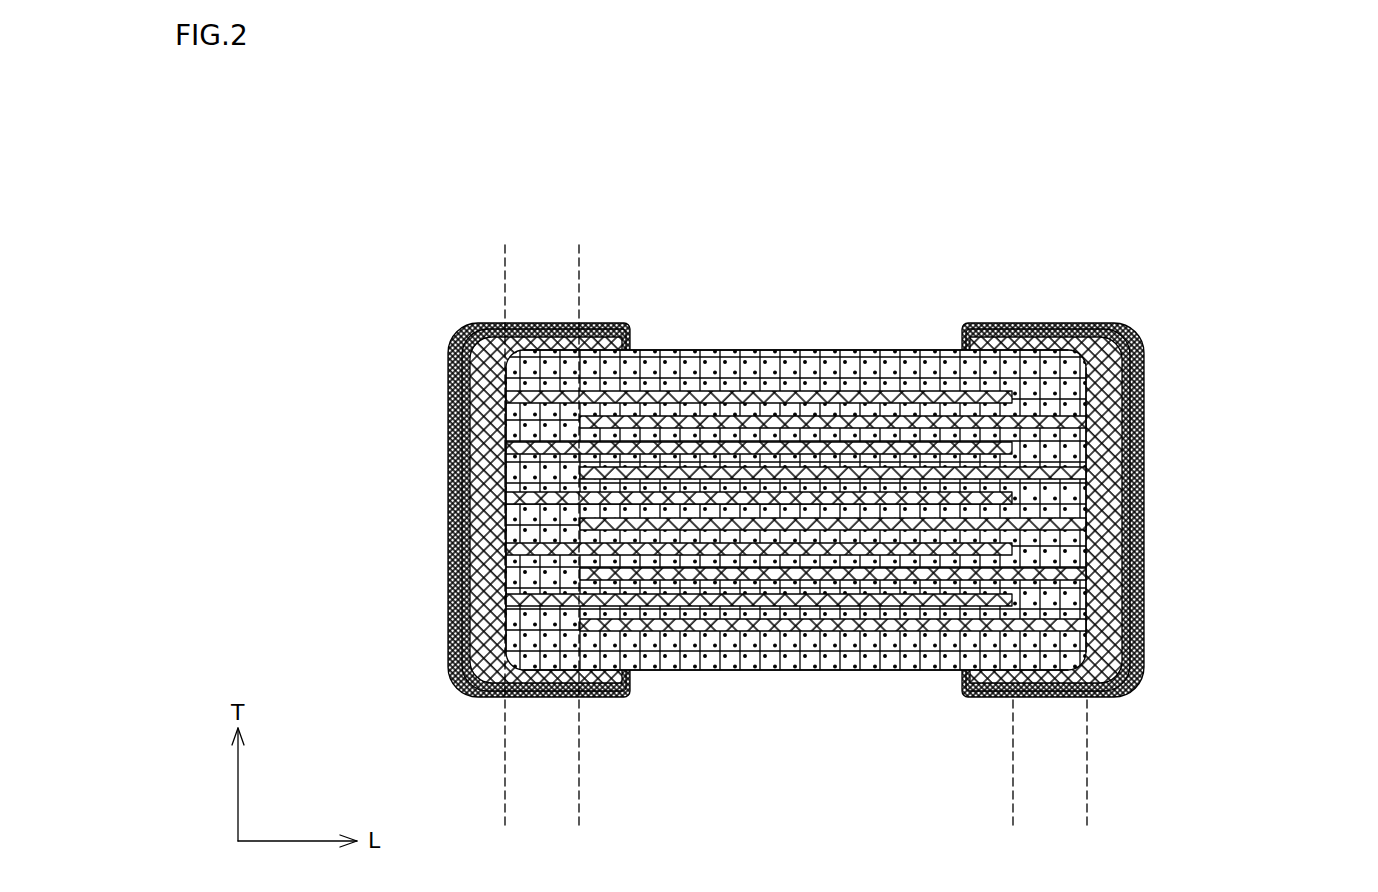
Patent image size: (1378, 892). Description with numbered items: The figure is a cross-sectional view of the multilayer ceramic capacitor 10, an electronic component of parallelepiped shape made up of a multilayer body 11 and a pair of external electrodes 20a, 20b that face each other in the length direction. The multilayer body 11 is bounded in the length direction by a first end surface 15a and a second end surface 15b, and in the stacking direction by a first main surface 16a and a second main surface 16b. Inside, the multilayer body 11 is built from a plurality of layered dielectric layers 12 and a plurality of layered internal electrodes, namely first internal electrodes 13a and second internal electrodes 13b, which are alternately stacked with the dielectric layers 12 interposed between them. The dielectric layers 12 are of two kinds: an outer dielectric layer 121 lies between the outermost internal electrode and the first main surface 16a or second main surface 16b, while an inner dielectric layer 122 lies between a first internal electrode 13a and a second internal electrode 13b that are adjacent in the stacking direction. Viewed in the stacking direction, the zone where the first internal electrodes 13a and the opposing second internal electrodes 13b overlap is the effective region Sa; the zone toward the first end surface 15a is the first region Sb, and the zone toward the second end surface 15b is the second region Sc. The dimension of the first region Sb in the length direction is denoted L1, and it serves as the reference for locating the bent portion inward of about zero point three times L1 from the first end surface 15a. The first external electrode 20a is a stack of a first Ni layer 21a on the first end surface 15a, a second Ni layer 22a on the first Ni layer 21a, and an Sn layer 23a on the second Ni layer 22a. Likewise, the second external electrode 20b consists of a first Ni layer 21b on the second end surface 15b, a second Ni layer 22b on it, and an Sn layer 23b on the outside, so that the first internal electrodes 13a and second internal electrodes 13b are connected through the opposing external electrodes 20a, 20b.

The multilayer ceramic capacitor 10 is at (970, 207).
The multilayer body 11 is at (680, 350).
The dielectric layer 12 is at (796, 510).
The outer dielectric layer 121 is at (937, 363).
The inner dielectric layer 122 is at (818, 437).
The first internal electrode 13a is at (915, 442).
The second internal electrode 13b is at (830, 577).
The first end surface 15a is at (503, 464).
The second end surface 15b is at (1089, 458).
The first main surface 16a is at (740, 350).
The second main surface 16b is at (670, 673).
The first external electrode 20a is at (669, 510).
The second external electrode 20b is at (934, 510).
The first Ni layer 21a is at (472, 512).
The second Ni layer 22a is at (466, 543).
The Sn layer 23a is at (455, 566).
The first Ni layer 21b is at (1122, 497).
The second Ni layer 22b is at (1130, 525).
The Sn layer 23b is at (1140, 552).
The dimension in the length direction of the first region L1 is at (579, 277).
The effective region Sa is at (1013, 812).
The first region Sb is at (579, 812).
The second region Sc is at (1087, 812).